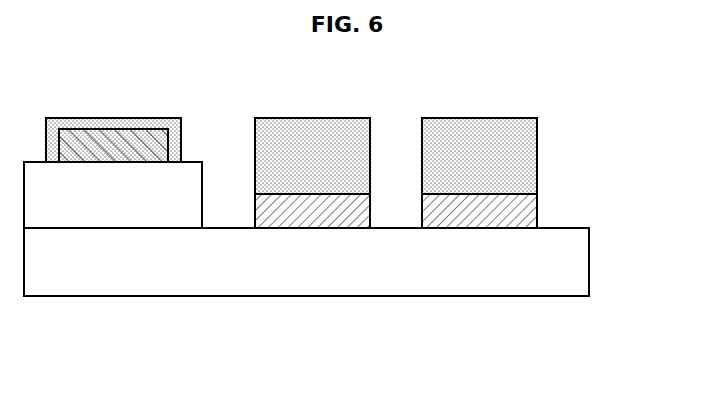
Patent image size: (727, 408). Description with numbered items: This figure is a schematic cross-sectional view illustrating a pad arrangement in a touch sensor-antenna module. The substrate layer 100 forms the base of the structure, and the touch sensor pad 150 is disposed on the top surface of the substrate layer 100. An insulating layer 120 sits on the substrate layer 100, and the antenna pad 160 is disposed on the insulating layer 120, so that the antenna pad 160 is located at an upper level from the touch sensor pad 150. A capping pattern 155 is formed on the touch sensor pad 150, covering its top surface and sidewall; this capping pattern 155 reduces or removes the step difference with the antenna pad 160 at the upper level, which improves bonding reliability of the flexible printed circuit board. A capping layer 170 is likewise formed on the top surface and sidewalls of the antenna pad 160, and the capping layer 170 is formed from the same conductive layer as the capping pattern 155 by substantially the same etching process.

The substrate layer 100 is at (583, 263).
The insulating layer 120 is at (115, 213).
The touch sensor pad 150 is at (317, 215).
The capping pattern 155 is at (313, 137).
The antenna pad 160 is at (92, 120).
The capping layer 170 is at (148, 122).